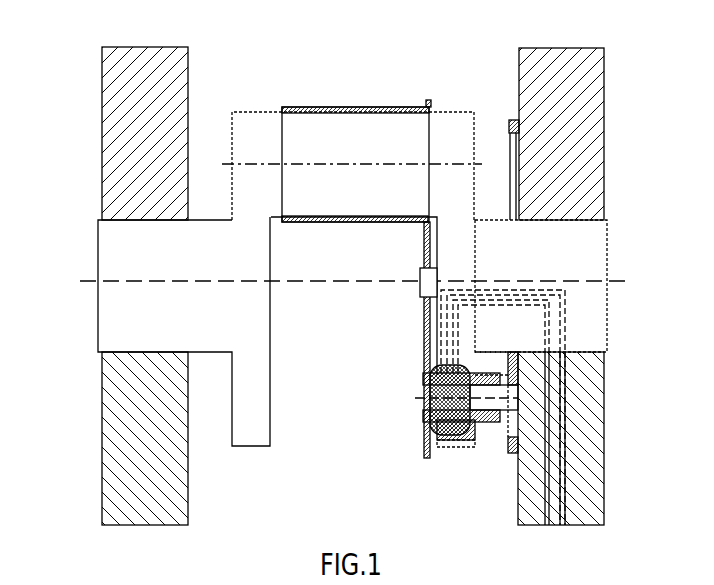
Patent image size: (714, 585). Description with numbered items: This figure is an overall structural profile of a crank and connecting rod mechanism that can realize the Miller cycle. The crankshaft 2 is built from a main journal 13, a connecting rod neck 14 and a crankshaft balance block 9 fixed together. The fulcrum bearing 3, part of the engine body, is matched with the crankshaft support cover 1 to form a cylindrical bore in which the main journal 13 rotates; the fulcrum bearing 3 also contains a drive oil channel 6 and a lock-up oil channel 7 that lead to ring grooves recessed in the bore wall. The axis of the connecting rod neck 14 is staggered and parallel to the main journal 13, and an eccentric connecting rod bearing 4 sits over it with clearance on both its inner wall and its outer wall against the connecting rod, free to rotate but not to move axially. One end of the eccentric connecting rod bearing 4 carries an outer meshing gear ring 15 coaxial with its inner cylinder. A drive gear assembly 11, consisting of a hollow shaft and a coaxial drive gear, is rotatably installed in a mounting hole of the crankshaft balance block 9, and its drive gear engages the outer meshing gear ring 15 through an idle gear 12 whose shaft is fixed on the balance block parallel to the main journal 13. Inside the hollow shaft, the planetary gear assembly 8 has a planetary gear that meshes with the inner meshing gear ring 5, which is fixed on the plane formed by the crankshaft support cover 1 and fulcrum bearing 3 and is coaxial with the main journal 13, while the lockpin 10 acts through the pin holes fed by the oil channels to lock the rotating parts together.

The crankshaft support cover 1 is at (130, 478).
The crankshaft 2 is at (130, 300).
The fulcrum bearing 3 is at (128, 152).
The eccentric connecting rod bearing 4 is at (352, 108).
The inner meshing gear ring 5 is at (507, 119).
The drive oil channel 6 is at (548, 455).
The lock-up oil channel 7 is at (565, 453).
The planetary gear assembly 8 is at (513, 402).
The crankshaft balance block 9 is at (457, 438).
The lockpin 10 is at (438, 427).
The drive gear assembly 11 is at (423, 380).
The idle gear 12 is at (428, 292).
The main journal 13 is at (587, 256).
The connecting rod neck 14 is at (320, 148).
The outer meshing gear ring 15 is at (428, 100).